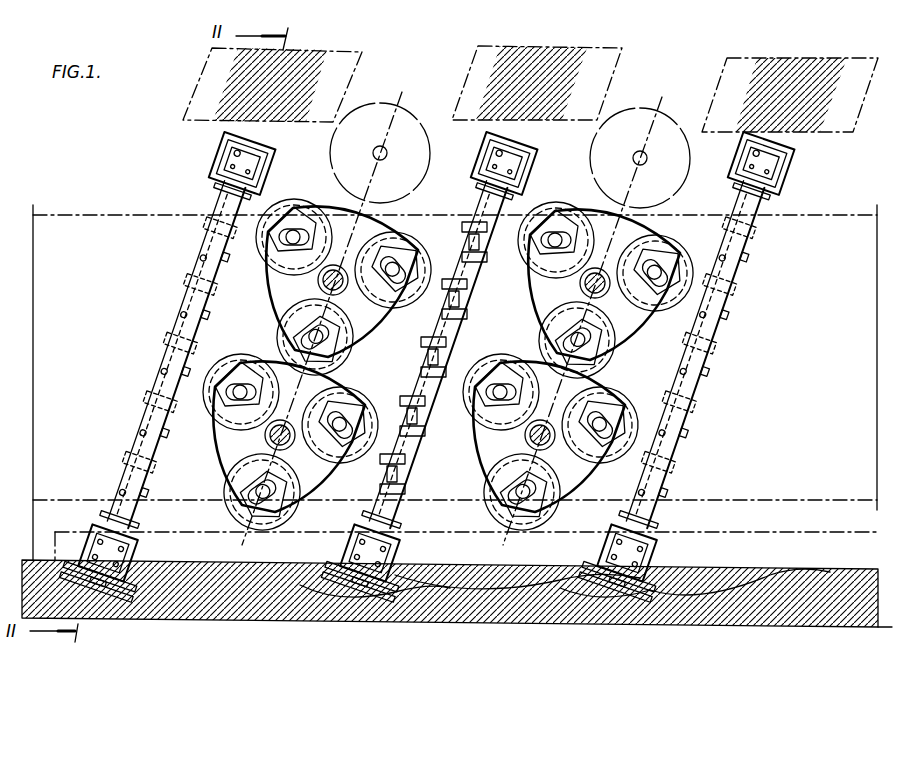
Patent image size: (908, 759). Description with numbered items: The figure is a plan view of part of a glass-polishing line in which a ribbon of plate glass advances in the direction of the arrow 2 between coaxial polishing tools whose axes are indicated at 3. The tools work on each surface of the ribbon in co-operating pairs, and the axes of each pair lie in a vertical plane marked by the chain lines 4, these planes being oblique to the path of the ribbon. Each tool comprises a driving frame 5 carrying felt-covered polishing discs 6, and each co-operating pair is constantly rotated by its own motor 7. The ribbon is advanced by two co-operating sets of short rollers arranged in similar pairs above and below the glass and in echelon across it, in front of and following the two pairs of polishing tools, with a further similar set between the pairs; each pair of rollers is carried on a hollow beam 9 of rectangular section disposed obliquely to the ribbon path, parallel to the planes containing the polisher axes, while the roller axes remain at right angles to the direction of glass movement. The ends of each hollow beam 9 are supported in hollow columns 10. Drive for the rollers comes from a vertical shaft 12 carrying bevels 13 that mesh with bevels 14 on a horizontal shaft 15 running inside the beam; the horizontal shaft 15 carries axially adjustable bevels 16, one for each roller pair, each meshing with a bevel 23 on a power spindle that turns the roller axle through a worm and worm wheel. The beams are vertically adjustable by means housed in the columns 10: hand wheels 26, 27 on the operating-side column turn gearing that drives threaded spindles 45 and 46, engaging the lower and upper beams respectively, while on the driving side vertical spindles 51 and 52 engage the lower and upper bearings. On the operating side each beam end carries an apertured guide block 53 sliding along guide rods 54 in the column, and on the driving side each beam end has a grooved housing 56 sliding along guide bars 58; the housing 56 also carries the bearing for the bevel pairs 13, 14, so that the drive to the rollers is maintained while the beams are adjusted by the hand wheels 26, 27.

The arrow 2 is at (172, 365).
The axes of polishing tools 3 is at (342, 290).
The chain lines 4 is at (352, 216).
The driving frame 5 is at (252, 433).
The polishing discs 6 is at (292, 202).
The motor 7 is at (398, 126).
The hollow beams 9 is at (202, 324).
The hollow columns 10 is at (571, 363).
The vertical shaft 12 is at (272, 152).
The bevels 13 is at (764, 150).
The bevels 14 is at (750, 168).
The horizontal shafts 15 is at (162, 380).
The bevels 16 is at (147, 410).
The bevel 23 is at (147, 415).
The hand wheel 26 is at (560, 578).
The hand wheel 27 is at (478, 566).
The spindle 45 is at (360, 522).
The spindle 46 is at (392, 540).
The vertical spindle 51 is at (484, 180).
The vertical spindle 52 is at (523, 180).
The guide block 53 is at (358, 545).
The guide rods 54 is at (346, 553).
The housing 56 is at (510, 168).
The guide bars 58 is at (488, 152).